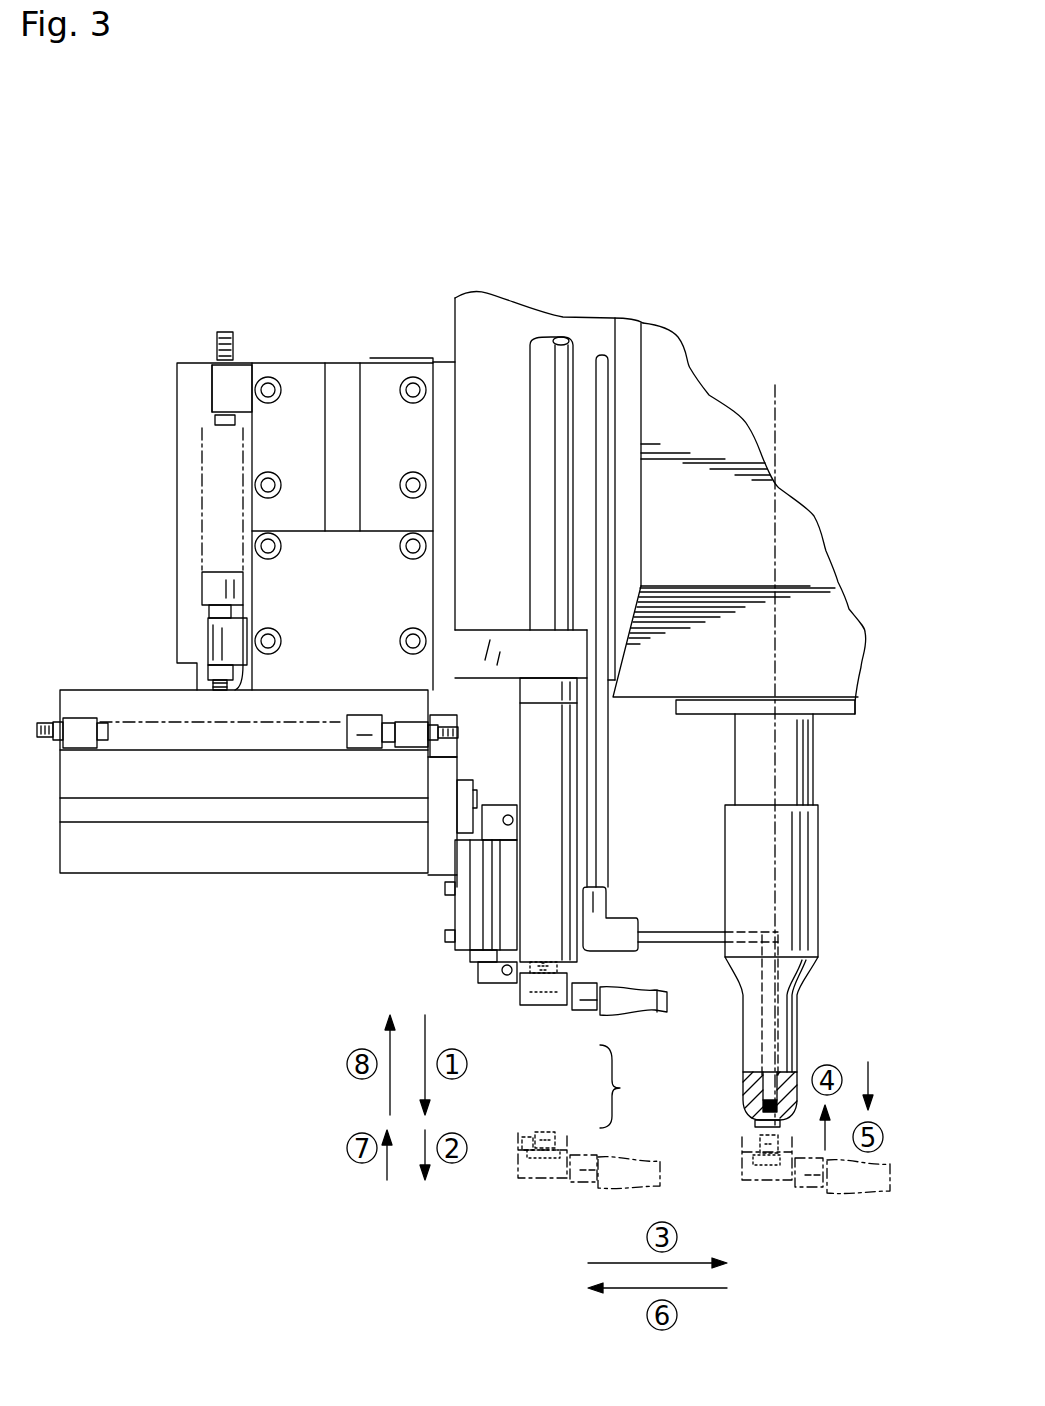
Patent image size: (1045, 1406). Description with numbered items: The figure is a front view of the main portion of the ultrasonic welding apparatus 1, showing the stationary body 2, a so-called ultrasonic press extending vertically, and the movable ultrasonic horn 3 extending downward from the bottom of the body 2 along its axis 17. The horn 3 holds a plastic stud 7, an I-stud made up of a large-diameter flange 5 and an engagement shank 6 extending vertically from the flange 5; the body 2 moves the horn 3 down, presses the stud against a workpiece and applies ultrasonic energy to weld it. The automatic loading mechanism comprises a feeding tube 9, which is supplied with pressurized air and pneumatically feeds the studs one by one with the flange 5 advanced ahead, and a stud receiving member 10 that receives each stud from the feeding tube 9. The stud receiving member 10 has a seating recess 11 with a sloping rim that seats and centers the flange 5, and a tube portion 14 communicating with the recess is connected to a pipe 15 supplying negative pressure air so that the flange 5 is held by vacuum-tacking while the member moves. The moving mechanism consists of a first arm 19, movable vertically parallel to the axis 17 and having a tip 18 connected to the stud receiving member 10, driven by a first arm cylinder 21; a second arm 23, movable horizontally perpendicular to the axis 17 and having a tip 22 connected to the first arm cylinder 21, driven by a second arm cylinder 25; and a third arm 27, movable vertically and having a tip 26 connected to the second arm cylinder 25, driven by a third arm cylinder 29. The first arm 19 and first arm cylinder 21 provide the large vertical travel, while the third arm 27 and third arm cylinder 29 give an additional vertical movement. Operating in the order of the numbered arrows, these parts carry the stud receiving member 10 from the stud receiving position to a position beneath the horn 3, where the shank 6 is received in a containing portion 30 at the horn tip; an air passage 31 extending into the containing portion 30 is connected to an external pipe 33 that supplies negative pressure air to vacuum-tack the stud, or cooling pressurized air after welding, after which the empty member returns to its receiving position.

The ultrasonic welding apparatus 1 is at (713, 307).
The stationary body 2 is at (686, 410).
The ultrasonic horn 3 is at (783, 1012).
The flange 5 is at (557, 1145).
The engagement shank 6 is at (548, 1130).
The plastic stud 7 is at (557, 966).
The feeding tube 9 is at (548, 470).
The stud receiving member 10 is at (535, 1000).
The seating recess 11 is at (530, 1135).
The tube portion 14 is at (585, 1008).
The pipe 15 is at (633, 1007).
The axis 17 is at (777, 538).
The tip 18 is at (513, 983).
The first arm 19 is at (493, 973).
The first arm cylinder 21 is at (505, 900).
The tip 22 is at (465, 853).
The second arm 23 is at (440, 778).
The second arm cylinder 25 is at (73, 733).
The tip 26 is at (300, 695).
The third arm 27 is at (217, 673).
The third arm cylinder 29 is at (212, 590).
The containing portion 30 is at (763, 1108).
The air passage 31 is at (763, 1090).
The external pipe 33 is at (602, 773).